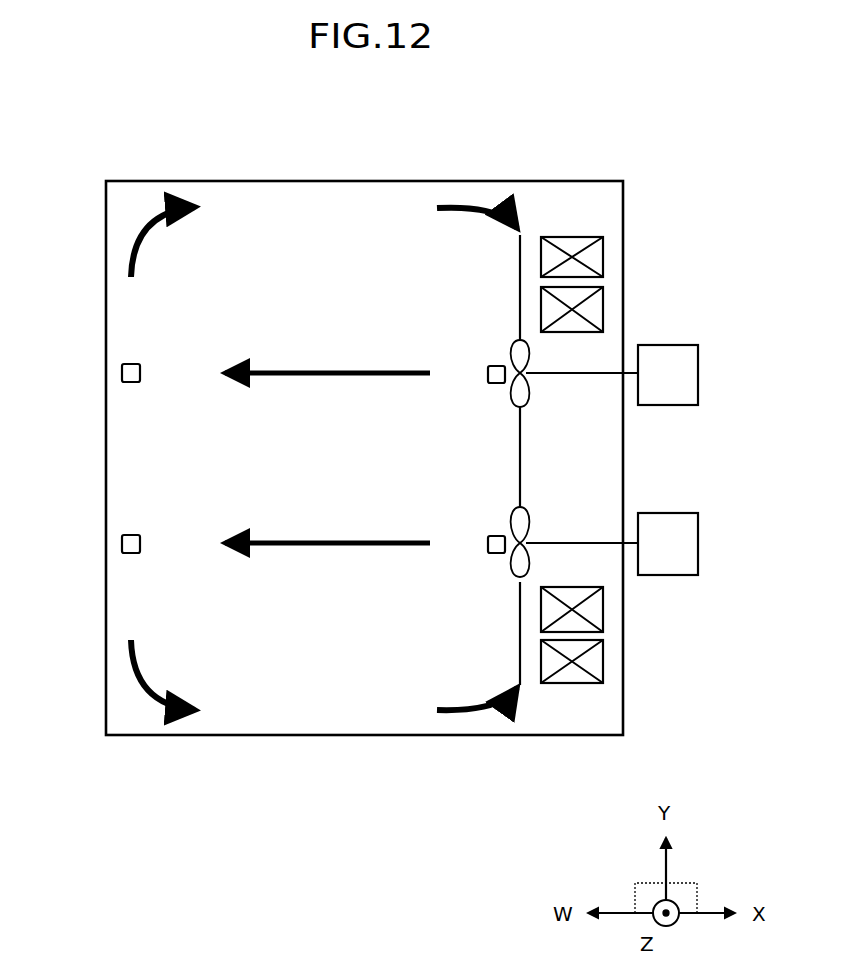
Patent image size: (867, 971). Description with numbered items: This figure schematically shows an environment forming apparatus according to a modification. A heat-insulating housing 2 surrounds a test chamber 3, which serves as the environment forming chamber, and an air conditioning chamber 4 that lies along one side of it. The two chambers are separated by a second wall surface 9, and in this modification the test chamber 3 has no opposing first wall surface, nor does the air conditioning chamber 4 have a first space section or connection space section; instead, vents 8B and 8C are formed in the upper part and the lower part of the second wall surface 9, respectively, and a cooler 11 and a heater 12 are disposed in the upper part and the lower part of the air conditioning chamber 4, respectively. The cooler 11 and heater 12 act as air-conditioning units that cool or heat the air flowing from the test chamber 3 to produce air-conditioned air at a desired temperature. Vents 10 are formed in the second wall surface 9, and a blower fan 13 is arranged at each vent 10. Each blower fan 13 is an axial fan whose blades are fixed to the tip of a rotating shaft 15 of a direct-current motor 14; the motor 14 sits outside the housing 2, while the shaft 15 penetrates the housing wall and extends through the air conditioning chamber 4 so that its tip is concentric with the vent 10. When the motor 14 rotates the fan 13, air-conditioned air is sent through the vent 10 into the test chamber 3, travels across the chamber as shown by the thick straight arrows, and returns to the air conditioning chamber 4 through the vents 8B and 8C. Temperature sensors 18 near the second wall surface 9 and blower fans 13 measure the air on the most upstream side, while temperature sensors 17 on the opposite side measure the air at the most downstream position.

The heat-insulating housing 2 is at (372, 181).
The test chamber 3 is at (338, 465).
The air conditioning chamber 4 is at (572, 466).
The vent 8B is at (528, 198).
The vent 8C is at (529, 720).
The second wall surface 9 is at (518, 437).
The vent 10 is at (508, 340).
The cooler 11 is at (603, 254).
The heater 12 is at (603, 310).
The blower fan 13 is at (512, 390).
The direct-current motor 14 is at (670, 345).
The rotating shaft 15 is at (583, 375).
The temperature sensor 17 is at (130, 363).
The temperature sensor 18 is at (488, 373).